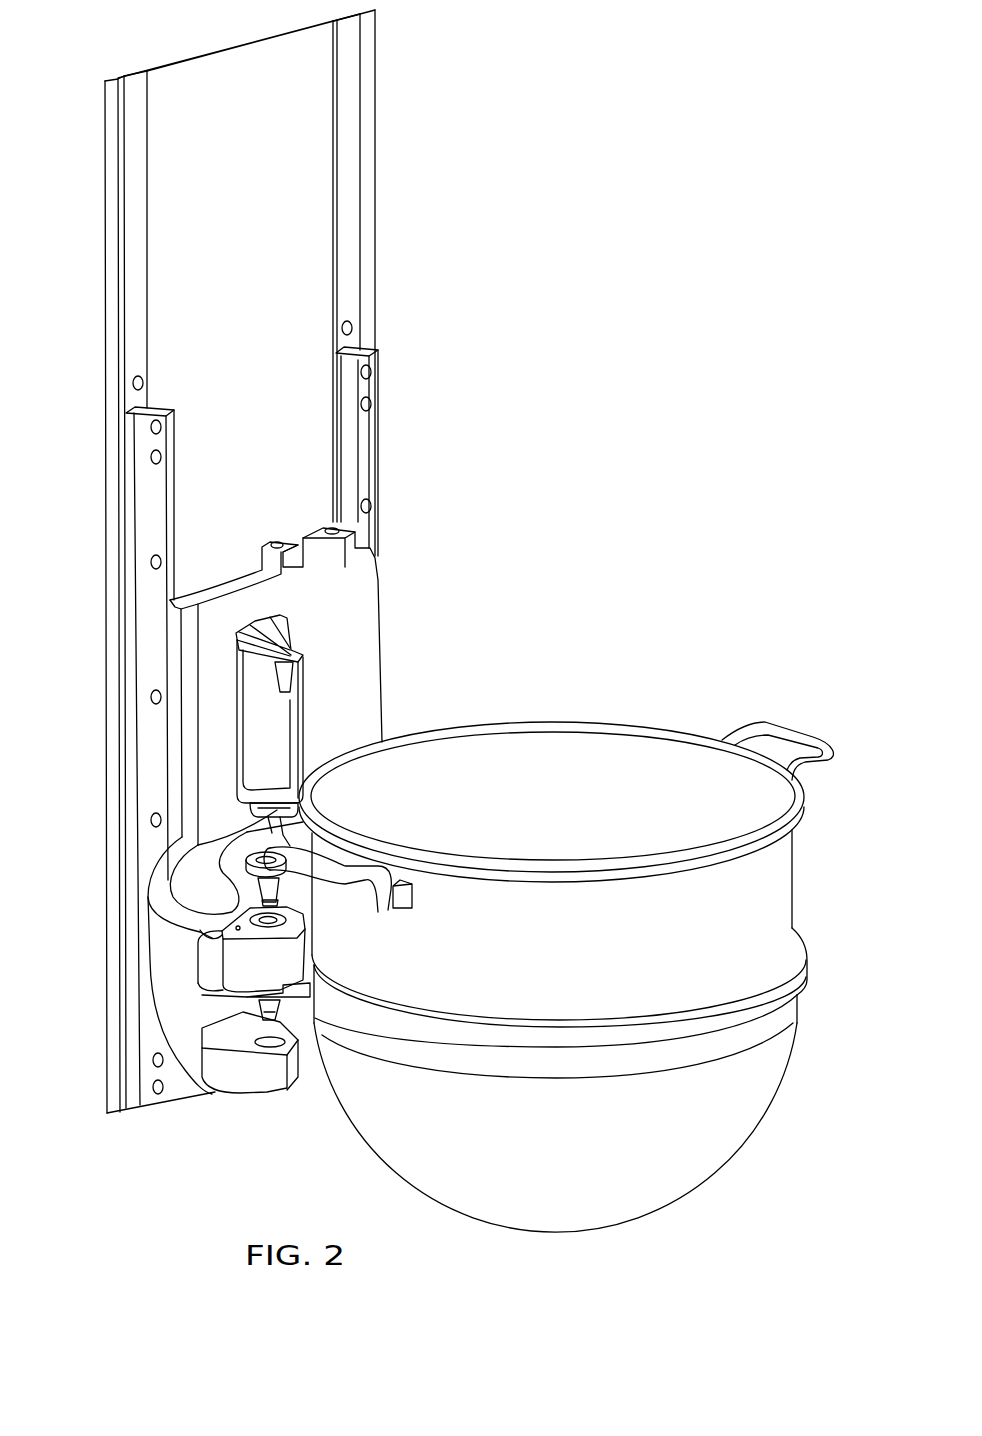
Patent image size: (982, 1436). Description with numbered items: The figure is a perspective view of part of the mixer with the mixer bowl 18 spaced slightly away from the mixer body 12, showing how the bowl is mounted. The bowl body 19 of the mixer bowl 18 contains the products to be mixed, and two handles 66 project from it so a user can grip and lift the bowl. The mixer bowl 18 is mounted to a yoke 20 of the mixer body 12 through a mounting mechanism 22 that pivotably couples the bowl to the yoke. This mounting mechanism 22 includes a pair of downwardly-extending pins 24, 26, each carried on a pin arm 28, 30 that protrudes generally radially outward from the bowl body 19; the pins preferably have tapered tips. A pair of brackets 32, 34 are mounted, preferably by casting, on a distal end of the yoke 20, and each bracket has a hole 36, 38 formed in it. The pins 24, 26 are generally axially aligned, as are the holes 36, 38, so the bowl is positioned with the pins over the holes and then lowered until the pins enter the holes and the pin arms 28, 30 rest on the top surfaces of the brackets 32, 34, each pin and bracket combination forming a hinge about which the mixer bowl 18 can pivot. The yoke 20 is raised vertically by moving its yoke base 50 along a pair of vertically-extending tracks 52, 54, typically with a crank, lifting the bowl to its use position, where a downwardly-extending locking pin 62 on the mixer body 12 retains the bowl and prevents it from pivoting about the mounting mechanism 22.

The mixer body 12 is at (320, 150).
The mixer bowl 18 is at (788, 868).
The bowl body 19 is at (770, 1095).
The yoke 20 is at (173, 868).
The mounting mechanism 22 is at (390, 946).
The pin 24 is at (283, 897).
The pin 26 is at (247, 997).
The pin arm 28 is at (250, 848).
The pin arm 30 is at (315, 1019).
The bracket 32 is at (322, 963).
The bracket 34 is at (235, 1087).
The hole 36 is at (302, 930).
The hole 38 is at (294, 1047).
The yoke base 50 is at (370, 588).
The track 52 is at (160, 487).
The track 54 is at (375, 438).
The locking pin 62 is at (290, 677).
The handles 66 is at (788, 727).